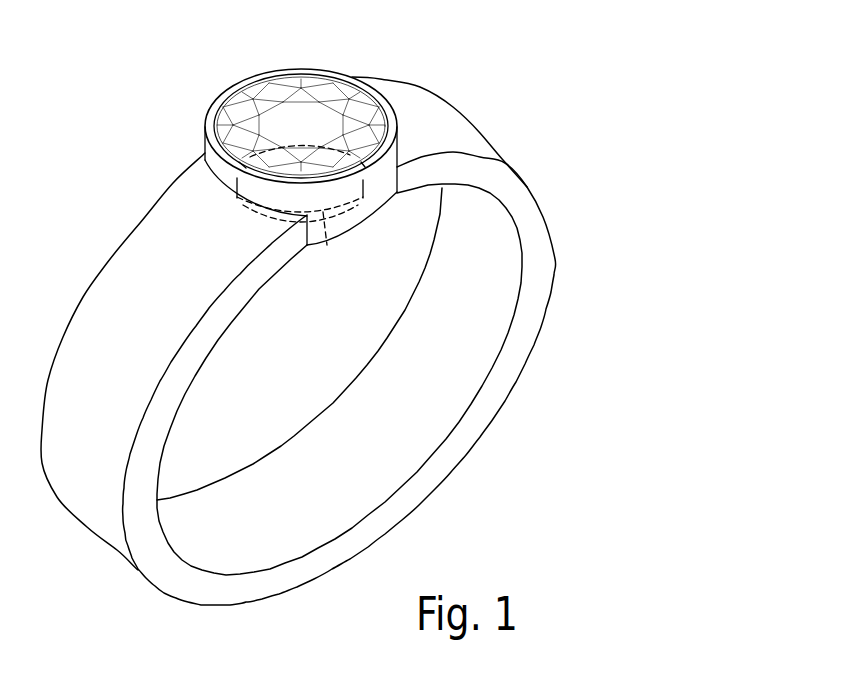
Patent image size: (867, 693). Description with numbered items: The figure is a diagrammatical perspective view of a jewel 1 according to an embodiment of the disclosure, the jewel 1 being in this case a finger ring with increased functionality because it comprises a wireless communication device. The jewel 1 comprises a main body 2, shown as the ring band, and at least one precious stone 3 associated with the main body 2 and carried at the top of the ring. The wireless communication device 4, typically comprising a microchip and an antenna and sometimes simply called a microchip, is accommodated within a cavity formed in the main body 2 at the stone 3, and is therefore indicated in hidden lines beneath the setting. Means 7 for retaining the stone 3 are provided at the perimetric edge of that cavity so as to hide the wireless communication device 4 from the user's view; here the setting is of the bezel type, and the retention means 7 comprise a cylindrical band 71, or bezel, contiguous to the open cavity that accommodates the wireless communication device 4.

The jewel 1 is at (383, 307).
The main body 2 is at (530, 388).
The precious stone 3 is at (307, 177).
The wireless communication device 4 is at (327, 245).
The means for retaining the stone 7 is at (400, 233).
The cylindrical band 71 is at (365, 218).